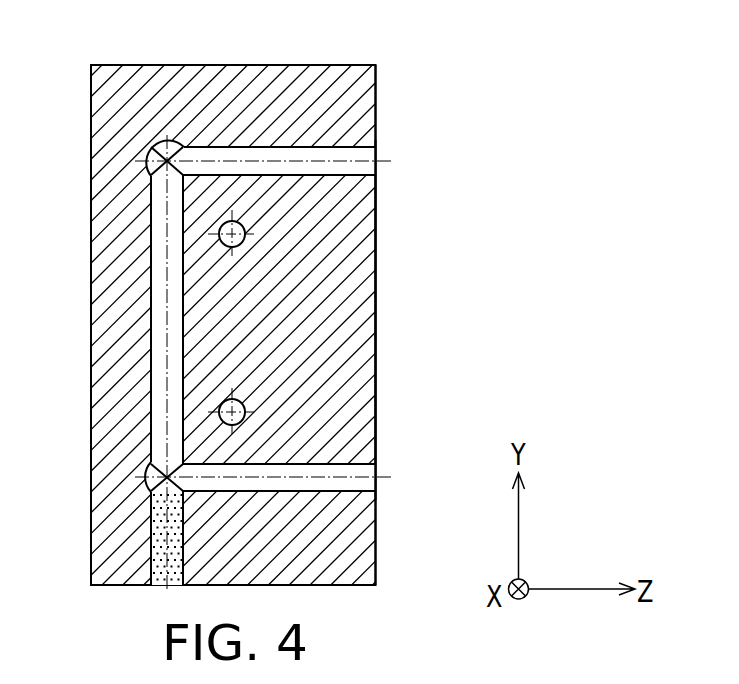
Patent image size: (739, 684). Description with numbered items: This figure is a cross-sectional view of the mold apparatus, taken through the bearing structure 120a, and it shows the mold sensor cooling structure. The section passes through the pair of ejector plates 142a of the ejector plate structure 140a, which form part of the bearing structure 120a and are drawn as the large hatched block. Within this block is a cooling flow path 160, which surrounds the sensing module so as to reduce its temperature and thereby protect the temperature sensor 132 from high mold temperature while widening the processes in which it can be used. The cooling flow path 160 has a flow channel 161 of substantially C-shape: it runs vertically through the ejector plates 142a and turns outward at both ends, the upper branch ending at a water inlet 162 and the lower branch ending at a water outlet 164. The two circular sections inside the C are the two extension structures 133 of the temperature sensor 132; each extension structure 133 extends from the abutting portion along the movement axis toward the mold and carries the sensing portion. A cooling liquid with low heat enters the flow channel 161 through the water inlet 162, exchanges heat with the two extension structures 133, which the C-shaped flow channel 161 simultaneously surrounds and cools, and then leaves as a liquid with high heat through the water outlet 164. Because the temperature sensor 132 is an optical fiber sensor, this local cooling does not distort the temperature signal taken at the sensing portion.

The bearing structure 120a is at (237, 65).
The ejector plate structure 140a is at (241, 300).
The ejector plates 142a is at (172, 92).
The cooling flow path 160 is at (360, 116).
The flow channel 161 is at (158, 302).
The water inlet 162 is at (394, 148).
The water outlet 164 is at (394, 482).
The extension structure 133 is at (244, 239).
The temperature sensor 132 is at (347, 323).